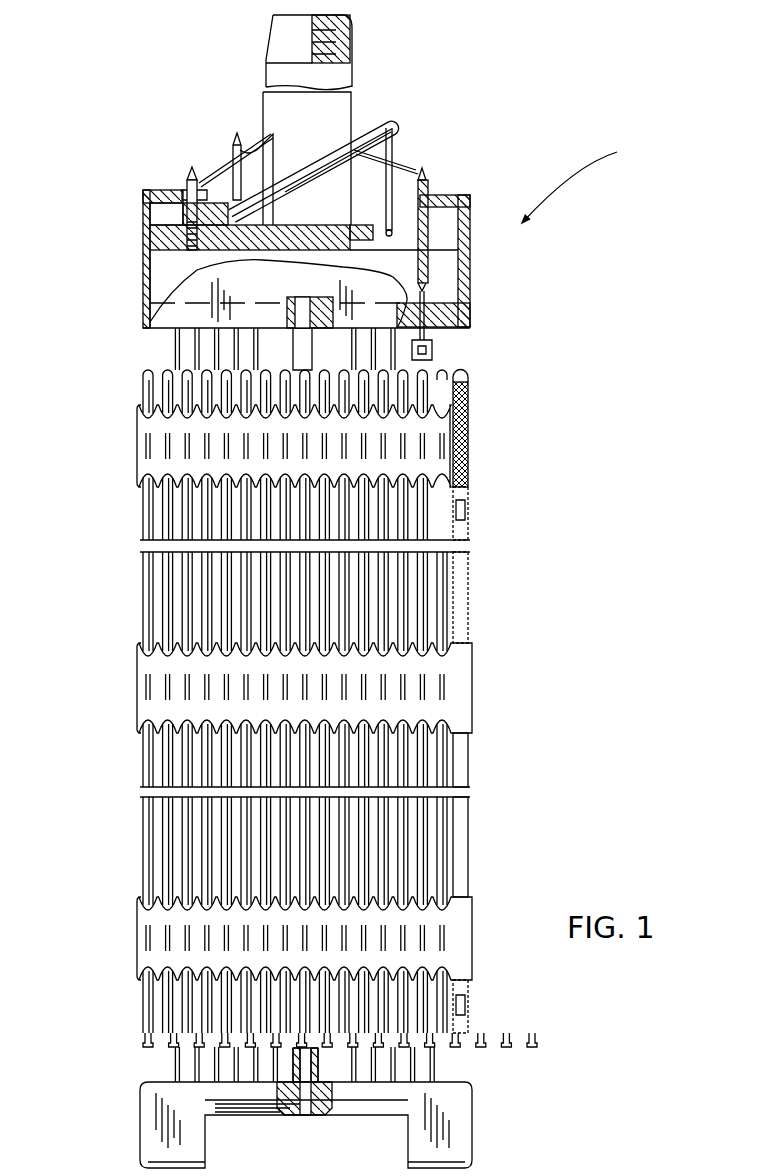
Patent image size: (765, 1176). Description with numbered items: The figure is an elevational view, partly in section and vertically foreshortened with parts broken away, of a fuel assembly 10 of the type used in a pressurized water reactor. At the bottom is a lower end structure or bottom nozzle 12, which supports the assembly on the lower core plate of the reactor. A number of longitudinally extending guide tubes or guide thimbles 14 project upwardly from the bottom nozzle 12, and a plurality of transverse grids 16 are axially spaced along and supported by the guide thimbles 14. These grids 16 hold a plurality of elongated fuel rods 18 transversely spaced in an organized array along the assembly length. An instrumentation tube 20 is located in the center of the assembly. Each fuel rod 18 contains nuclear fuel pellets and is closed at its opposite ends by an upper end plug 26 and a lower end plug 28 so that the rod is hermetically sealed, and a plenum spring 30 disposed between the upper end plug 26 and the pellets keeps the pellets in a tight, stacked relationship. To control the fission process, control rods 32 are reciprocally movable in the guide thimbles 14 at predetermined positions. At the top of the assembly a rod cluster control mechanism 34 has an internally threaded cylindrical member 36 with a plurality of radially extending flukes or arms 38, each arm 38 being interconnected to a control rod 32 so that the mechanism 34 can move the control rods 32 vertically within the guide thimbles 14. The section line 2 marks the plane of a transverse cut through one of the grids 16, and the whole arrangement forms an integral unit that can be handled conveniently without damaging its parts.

The fuel assembly 10 is at (580, 175).
The bottom nozzle 12 is at (472, 1130).
The guide thimbles 14 is at (180, 348).
The grids 16 is at (137, 447).
The fuel rods 18 is at (140, 515).
The instrumentation tube 20 is at (300, 1082).
The upper end plug 26 is at (140, 377).
The lower end plug 28 is at (172, 1040).
The plenum spring 30 is at (469, 448).
The control rods 32 is at (470, 292).
The rod cluster control mechanism 34 is at (353, 104).
The internally threaded cylindrical member 36 is at (262, 108).
The arms 38 is at (222, 165).
The section line 2- 2 is at (110, 668).